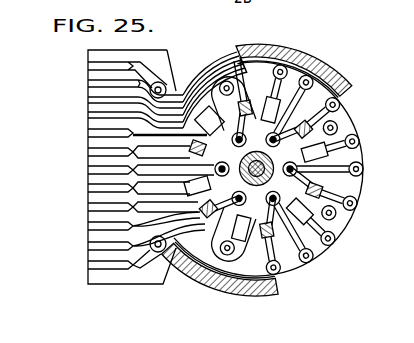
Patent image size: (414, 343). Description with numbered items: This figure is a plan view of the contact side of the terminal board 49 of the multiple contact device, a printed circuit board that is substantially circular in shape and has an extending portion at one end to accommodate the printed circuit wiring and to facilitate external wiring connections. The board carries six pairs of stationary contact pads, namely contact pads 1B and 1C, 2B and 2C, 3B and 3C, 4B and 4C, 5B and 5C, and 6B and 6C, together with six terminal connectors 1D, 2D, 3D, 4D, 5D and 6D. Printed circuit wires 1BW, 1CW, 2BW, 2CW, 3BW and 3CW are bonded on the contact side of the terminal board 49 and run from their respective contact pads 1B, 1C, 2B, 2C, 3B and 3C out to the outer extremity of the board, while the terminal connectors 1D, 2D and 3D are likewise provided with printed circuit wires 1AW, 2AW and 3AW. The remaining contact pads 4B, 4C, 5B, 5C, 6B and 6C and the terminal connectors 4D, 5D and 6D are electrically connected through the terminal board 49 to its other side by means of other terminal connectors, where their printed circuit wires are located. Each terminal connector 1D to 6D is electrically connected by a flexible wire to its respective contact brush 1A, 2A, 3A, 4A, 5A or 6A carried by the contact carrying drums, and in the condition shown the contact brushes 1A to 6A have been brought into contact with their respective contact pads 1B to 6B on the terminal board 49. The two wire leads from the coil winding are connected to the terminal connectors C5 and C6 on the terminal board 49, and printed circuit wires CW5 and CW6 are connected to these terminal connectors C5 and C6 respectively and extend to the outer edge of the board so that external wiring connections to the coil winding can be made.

The terminal board 49 is at (151, 285).
The printed circuit wire CW5 is at (88, 66).
The printed circuit wire 1BW is at (88, 84).
The printed circuit wire 1AW is at (88, 100).
The printed circuit wire 1CW is at (88, 115).
The contact brush 2A is at (88, 136).
The printed circuit wire 2BW is at (88, 152).
The printed circuit wire 2AW is at (88, 170).
The printed circuit wire 2CW is at (88, 188).
The printed circuit wire 3BW is at (88, 207).
The printed circuit wire 3AW is at (88, 226).
The printed circuit wire 3CW is at (88, 246).
The printed circuit wire CW6 is at (88, 265).
The terminal connector C5 is at (157, 82).
The terminal connector C6 is at (157, 252).
The contact brush 1A is at (236, 59).
The stationary contact pad 1B is at (246, 102).
The stationary contact pad 1C is at (206, 113).
The terminal connector 1D is at (236, 145).
The stationary contact pad 2B is at (191, 149).
The stationary contact pad 2C is at (188, 184).
The terminal connector 2D is at (224, 176).
The contact brush 3A is at (195, 282).
The stationary contact pad 3B is at (203, 208).
The stationary contact pad 3C is at (243, 240).
The terminal connector 3D is at (244, 204).
The contact brush 4A is at (280, 206).
The stationary contact pad 4B is at (267, 238).
The stationary contact pad 4C is at (310, 222).
The terminal connector 4D is at (283, 193).
The contact brush 5A is at (323, 189).
The stationary contact pad 5B is at (337, 208).
The stationary contact pad 5C is at (325, 152).
The terminal connector 5D is at (323, 160).
The contact brush 6A is at (312, 126).
The stationary contact pad 6B is at (337, 78).
The stationary contact pad 6C is at (281, 106).
The terminal connector 6D is at (246, 140).